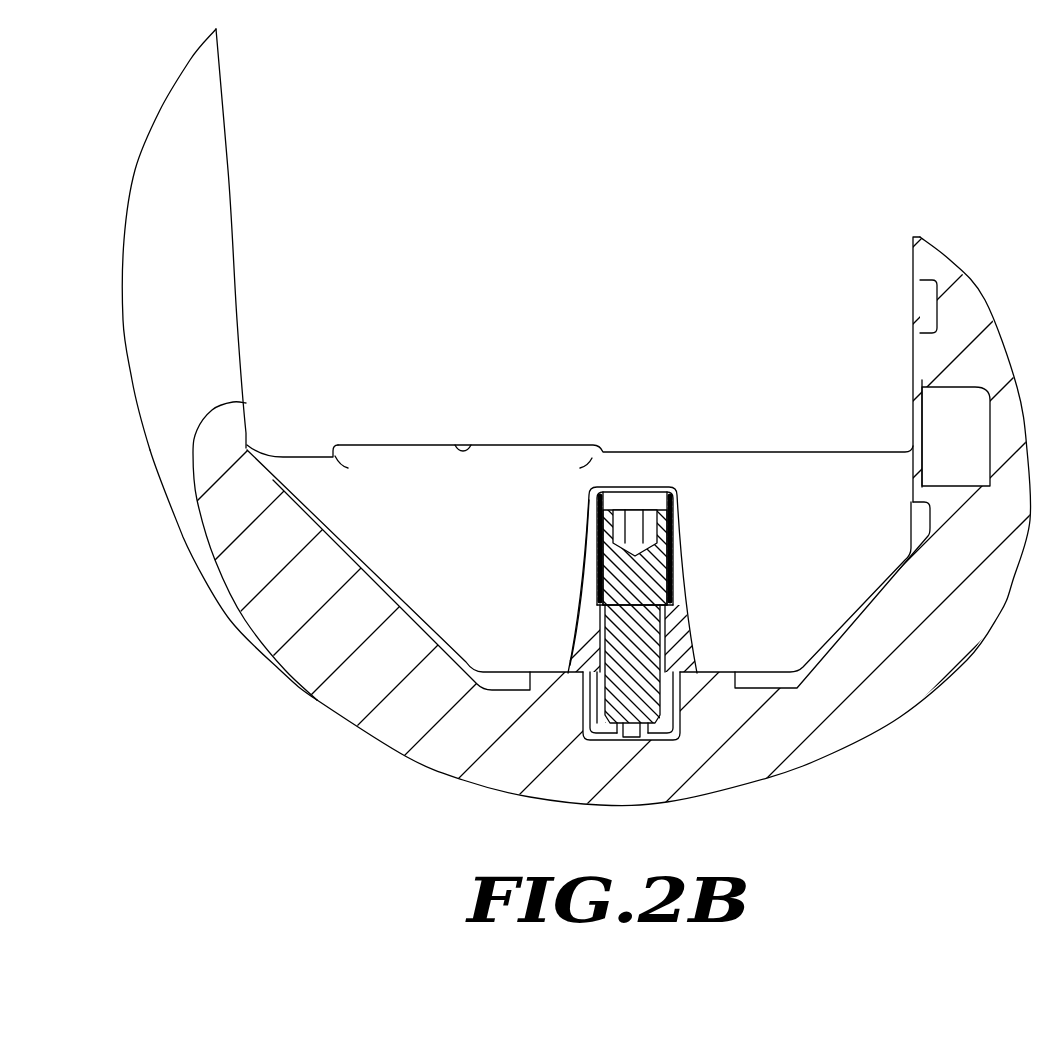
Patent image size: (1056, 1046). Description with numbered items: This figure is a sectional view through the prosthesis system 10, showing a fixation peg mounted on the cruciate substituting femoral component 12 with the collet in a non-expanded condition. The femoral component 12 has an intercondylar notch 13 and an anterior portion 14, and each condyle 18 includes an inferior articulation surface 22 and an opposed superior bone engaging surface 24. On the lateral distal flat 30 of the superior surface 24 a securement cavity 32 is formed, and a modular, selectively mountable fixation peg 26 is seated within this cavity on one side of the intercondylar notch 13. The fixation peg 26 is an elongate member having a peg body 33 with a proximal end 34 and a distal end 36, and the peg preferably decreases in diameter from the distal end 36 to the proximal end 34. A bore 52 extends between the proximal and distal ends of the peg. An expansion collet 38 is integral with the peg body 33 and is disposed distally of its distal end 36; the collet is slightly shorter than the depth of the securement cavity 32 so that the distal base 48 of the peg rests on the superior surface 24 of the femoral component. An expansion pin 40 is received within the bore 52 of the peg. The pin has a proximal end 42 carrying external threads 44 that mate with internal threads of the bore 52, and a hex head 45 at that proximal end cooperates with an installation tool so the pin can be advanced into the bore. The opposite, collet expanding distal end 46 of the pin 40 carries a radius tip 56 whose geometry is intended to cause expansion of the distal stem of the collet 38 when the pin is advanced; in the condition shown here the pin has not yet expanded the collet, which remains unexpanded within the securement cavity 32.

The prosthesis system 10 is at (225, 740).
The cruciate substituting femoral component 12 is at (212, 568).
The intercondylar notch 13 is at (458, 520).
The anterior portion 14 is at (121, 244).
The condyle 18 is at (818, 742).
The inferior articulation surface 22 is at (705, 800).
The superior bone engaging surface 24 is at (753, 670).
The fixation peg 26 is at (678, 533).
The lateral distal flat 30 is at (511, 670).
The securement cavity 32 is at (588, 736).
The peg body 33 is at (576, 587).
The proximal end 34 is at (680, 488).
The distal end 36 is at (569, 663).
The expansion collet 38 is at (594, 710).
The expansion pin 40 is at (637, 580).
The proximal end 42 is at (598, 506).
The external threads 44 is at (600, 550).
The hex head 45 is at (635, 505).
The distal end 46 is at (635, 728).
The distal base 48 is at (681, 665).
The bore 52 is at (662, 627).
The radius tip 56 is at (677, 727).